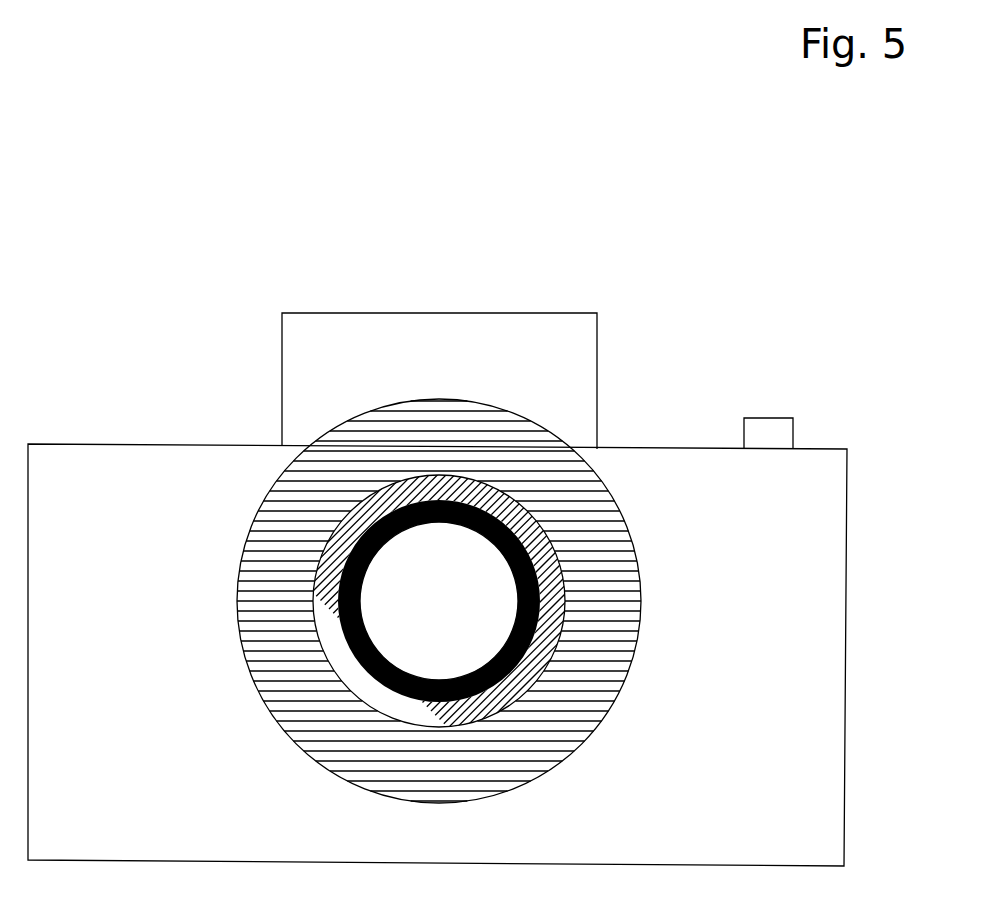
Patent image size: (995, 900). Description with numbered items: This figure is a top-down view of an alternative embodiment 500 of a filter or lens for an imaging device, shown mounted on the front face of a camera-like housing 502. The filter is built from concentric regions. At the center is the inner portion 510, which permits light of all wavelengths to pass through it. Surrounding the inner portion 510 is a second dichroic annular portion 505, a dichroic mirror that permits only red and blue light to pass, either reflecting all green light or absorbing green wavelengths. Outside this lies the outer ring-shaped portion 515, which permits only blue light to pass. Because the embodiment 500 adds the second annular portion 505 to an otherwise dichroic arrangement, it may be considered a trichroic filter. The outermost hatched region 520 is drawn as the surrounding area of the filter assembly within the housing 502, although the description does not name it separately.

The embodiment 500 is at (291, 462).
The camera body 502 is at (602, 423).
The second dichroic annular portion 505 is at (358, 532).
The inner portion 510 is at (439, 601).
The outer ring-shaped portion 515 is at (327, 542).
The outer lens housing 520 is at (268, 667).